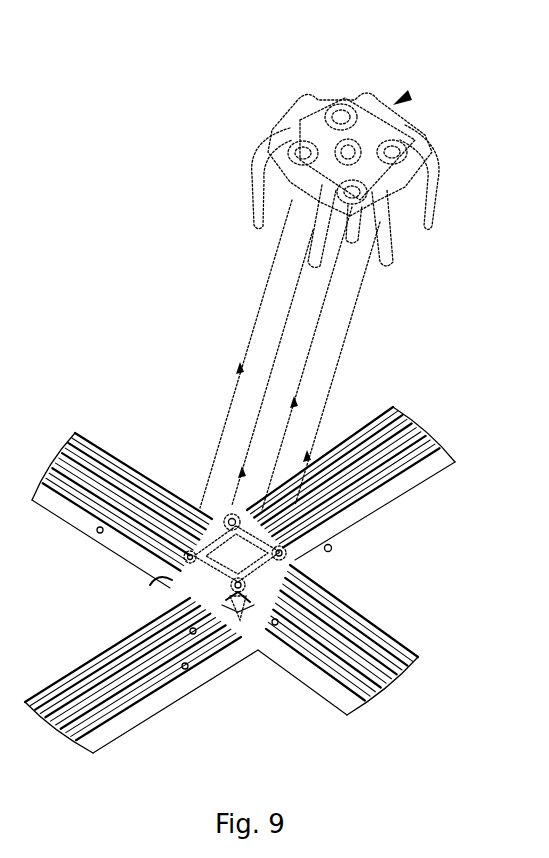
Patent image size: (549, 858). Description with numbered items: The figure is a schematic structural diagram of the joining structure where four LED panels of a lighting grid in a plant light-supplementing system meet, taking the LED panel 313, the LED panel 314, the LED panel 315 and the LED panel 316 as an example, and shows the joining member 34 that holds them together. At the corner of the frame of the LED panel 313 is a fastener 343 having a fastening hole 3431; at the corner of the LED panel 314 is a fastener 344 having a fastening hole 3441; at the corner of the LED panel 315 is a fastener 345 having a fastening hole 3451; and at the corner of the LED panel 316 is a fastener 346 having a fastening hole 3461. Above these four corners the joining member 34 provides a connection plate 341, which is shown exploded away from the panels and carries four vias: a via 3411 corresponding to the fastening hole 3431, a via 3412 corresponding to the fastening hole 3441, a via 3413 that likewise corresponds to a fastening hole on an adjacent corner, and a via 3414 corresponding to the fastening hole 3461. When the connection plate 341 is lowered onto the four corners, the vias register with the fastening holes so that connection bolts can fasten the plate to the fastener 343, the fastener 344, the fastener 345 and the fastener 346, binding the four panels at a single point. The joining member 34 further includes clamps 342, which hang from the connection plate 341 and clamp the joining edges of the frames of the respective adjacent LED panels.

The joining member 34 is at (400, 98).
The connection plate 341 is at (322, 108).
The via 3411 is at (410, 153).
The via 3412 is at (347, 196).
The via 3413 is at (292, 137).
The via 3414 is at (347, 140).
The clamp 342 is at (258, 197).
The fastener 343 is at (290, 562).
The fastening hole 3431 is at (330, 548).
The fastener 344 is at (233, 605).
The fastening hole 3441 is at (240, 625).
The fastener 345 is at (158, 578).
The fastening hole 3451 is at (186, 559).
The fastener 346 is at (215, 517).
The fastening hole 3461 is at (229, 514).
The LED panel 313 is at (362, 528).
The LED panel 314 is at (292, 666).
The LED panel 315 is at (80, 524).
The LED panel 316 is at (152, 482).